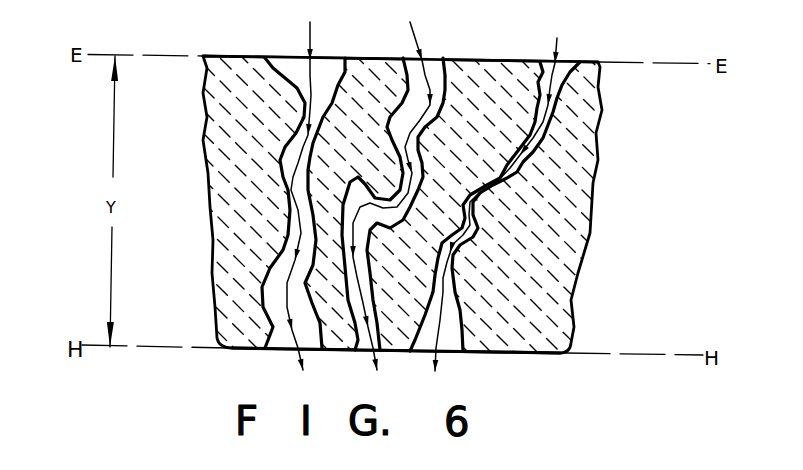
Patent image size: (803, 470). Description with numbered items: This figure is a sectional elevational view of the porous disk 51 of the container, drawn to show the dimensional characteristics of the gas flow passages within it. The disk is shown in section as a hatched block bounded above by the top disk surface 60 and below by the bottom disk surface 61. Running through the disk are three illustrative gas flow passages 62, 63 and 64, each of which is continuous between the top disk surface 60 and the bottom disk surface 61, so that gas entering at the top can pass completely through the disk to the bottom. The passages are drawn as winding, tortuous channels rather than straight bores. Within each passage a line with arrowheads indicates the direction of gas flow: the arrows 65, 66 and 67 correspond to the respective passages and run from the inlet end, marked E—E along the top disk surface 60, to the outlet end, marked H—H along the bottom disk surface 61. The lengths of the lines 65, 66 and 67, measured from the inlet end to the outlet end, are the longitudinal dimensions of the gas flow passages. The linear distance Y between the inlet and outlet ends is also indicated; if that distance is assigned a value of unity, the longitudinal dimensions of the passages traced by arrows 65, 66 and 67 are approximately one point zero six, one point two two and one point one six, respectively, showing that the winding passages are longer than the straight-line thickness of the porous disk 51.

The porous disk 51 is at (592, 158).
The top disk surface 60 is at (232, 55).
The bottom disk surface 61 is at (497, 353).
The gas flow passage 62 is at (567, 62).
The gas flow passage 63 is at (442, 62).
The gas flow passage 64 is at (341, 63).
The arrow 65 is at (553, 45).
The arrow 66 is at (414, 24).
The arrow 67 is at (312, 42).